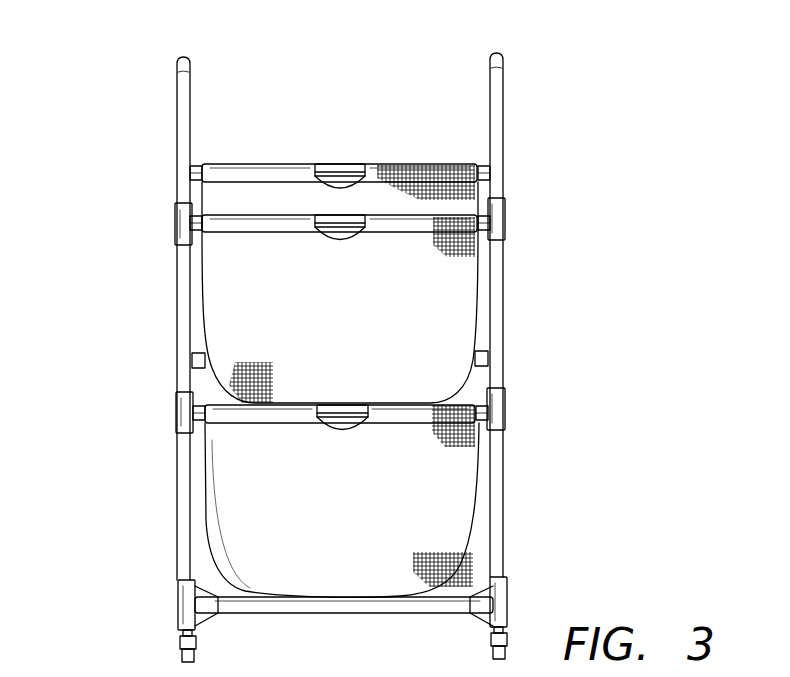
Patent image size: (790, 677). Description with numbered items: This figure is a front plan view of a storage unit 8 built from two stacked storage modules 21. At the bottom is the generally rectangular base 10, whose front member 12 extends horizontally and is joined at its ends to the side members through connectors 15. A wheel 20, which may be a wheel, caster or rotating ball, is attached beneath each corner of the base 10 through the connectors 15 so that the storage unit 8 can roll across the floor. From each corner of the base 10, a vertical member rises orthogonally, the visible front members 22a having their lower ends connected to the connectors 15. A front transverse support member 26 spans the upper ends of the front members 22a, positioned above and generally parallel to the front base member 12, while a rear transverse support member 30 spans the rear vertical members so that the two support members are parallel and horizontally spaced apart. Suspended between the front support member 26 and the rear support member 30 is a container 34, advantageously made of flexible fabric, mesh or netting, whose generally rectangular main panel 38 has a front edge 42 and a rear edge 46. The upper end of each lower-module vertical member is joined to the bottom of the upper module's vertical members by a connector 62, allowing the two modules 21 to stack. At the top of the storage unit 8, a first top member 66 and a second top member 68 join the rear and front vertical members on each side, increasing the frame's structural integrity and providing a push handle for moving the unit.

The storage unit 8 is at (580, 82).
The base 10 is at (147, 613).
The front member 12 is at (258, 607).
The connector 15 is at (505, 590).
The wheel 20 is at (508, 640).
The storage module 21 is at (530, 258).
The front member 22a is at (184, 510).
The front transverse support member 26 is at (343, 218).
The rear transverse support member 30 is at (348, 165).
The container 34 is at (236, 529).
The main panel 38 is at (248, 278).
The front edge 42 is at (447, 215).
The rear edge 46 is at (222, 183).
The connector 62 is at (500, 216).
The first top member 66 is at (178, 58).
The second top member 68 is at (497, 56).